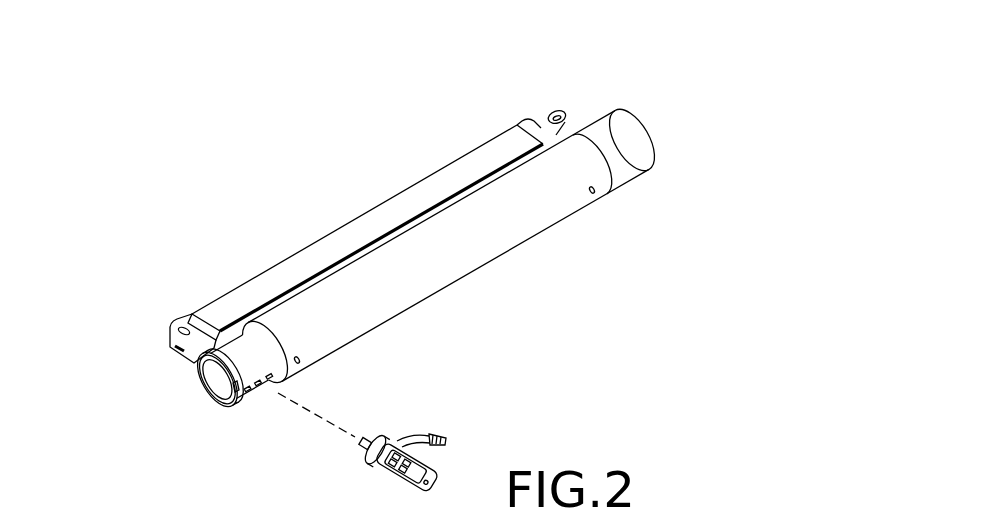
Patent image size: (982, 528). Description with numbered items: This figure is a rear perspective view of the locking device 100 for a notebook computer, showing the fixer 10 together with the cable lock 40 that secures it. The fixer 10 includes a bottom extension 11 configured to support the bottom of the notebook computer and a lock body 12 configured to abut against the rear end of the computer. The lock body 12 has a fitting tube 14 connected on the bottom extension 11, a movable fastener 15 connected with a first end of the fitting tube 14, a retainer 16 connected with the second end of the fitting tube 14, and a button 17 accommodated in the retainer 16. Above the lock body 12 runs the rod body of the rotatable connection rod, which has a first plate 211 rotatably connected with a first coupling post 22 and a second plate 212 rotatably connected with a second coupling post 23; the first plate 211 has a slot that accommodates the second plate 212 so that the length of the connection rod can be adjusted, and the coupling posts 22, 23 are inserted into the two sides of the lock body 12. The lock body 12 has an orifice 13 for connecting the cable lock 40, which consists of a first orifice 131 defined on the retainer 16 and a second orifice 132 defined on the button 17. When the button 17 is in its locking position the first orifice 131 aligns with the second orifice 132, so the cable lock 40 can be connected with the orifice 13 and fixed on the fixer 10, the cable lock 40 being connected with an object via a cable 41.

The locking device 100 is at (224, 137).
The fixer 10 is at (663, 128).
The bottom extension 11 is at (512, 162).
The lock body 12 is at (592, 205).
The orifice 13 is at (288, 375).
The first orifice 131 is at (257, 392).
The second orifice 132 is at (262, 388).
The fitting tube 14 is at (485, 242).
The movable fastener 15 is at (632, 132).
The retainer 16 is at (252, 340).
The button 17 is at (208, 388).
The first plate 211 is at (395, 207).
The second plate 212 is at (200, 325).
The first coupling post 22 is at (567, 120).
The second coupling post 23 is at (172, 333).
The cable lock 40 is at (382, 465).
The cable 41 is at (440, 440).